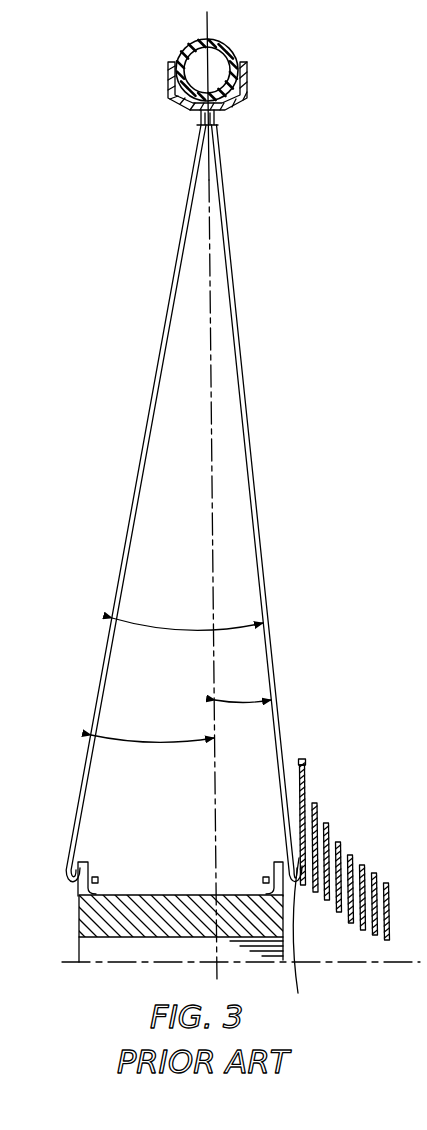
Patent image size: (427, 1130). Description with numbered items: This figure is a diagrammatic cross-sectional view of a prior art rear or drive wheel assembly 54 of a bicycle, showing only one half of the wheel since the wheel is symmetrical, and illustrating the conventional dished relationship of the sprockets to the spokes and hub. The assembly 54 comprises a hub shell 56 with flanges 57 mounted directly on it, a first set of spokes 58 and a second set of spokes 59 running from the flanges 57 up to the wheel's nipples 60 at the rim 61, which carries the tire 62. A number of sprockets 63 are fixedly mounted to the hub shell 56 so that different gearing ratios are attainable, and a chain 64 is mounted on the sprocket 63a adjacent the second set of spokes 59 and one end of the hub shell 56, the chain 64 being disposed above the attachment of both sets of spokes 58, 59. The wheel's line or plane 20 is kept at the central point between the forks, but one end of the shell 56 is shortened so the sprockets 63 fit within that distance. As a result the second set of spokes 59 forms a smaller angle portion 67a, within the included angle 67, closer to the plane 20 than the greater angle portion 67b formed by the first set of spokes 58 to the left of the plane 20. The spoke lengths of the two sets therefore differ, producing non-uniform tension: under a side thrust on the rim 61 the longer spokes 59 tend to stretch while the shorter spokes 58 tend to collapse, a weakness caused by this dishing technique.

The line or plane 20 is at (213, 541).
The rear or drive wheel assembly 54 is at (153, 290).
The hub shell 56 is at (131, 894).
The flanges 57 is at (84, 862).
The first set of spokes 58 is at (128, 533).
The second set of spokes 59 is at (256, 540).
The nipples 60 is at (202, 117).
The rim 61 is at (249, 82).
The tire 62 is at (228, 46).
The sprockets 63 is at (308, 756).
The sprocket 63a is at (312, 940).
The chain 64 is at (305, 757).
The included angle 67 is at (192, 629).
The angle portion 67a is at (242, 700).
The angle portion 67b is at (160, 742).